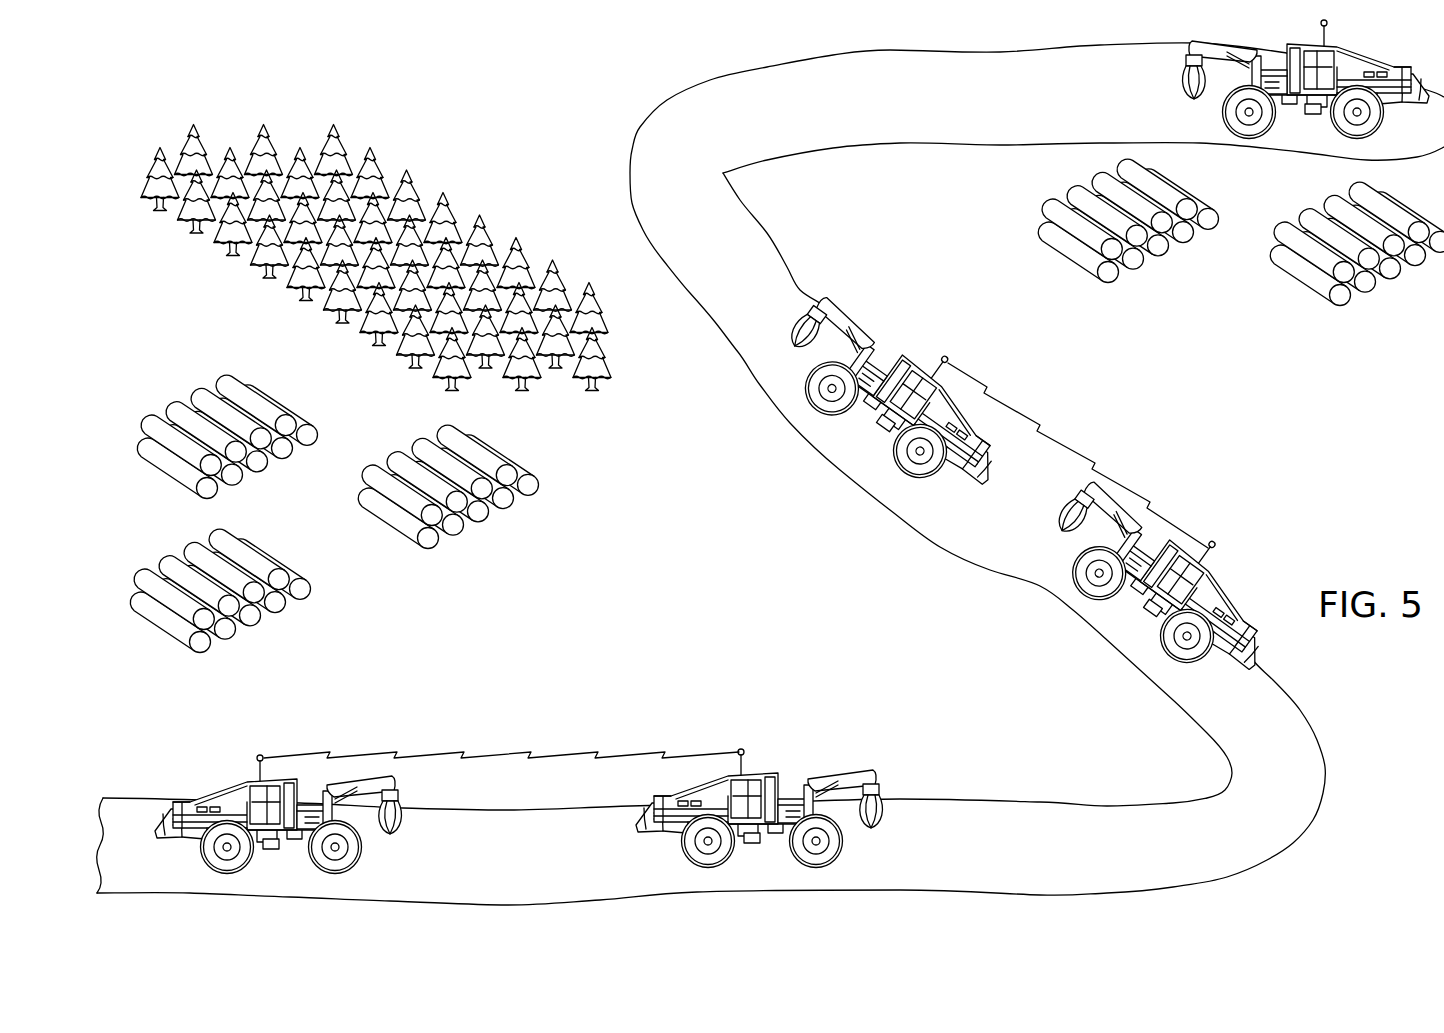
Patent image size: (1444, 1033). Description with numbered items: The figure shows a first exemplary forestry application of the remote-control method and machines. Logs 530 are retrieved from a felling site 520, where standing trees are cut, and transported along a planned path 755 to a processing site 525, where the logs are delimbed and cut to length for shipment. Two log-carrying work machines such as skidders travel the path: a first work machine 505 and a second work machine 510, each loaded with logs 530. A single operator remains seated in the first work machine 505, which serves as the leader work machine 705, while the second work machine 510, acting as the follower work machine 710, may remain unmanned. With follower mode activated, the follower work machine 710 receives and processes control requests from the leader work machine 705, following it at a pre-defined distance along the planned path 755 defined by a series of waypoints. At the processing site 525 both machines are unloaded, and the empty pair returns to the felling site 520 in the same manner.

The felling site 520 is at (277, 100).
The logs 530 is at (273, 384).
The processing site 525 is at (1419, 44).
The planned path 755 is at (637, 134).
The first work machine 505 is at (834, 571).
The second work machine 510 is at (741, 667).
The leader work machine 705 is at (853, 326).
The follower work machine 710 is at (1200, 562).